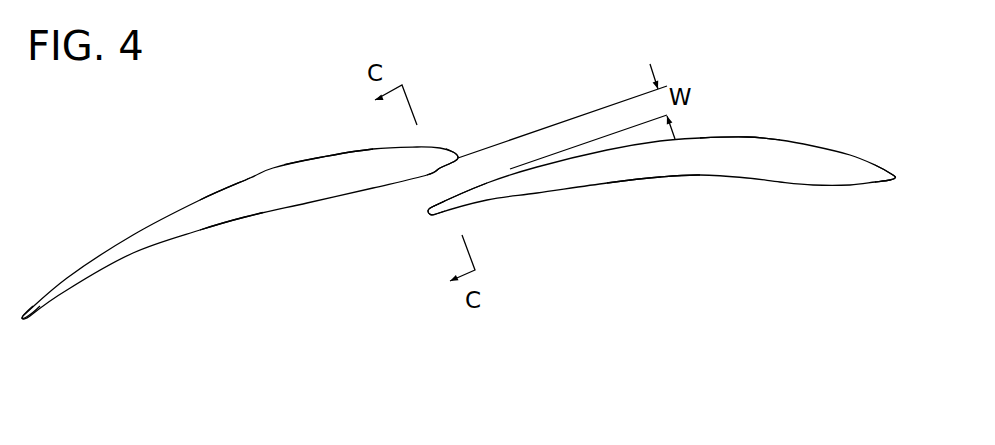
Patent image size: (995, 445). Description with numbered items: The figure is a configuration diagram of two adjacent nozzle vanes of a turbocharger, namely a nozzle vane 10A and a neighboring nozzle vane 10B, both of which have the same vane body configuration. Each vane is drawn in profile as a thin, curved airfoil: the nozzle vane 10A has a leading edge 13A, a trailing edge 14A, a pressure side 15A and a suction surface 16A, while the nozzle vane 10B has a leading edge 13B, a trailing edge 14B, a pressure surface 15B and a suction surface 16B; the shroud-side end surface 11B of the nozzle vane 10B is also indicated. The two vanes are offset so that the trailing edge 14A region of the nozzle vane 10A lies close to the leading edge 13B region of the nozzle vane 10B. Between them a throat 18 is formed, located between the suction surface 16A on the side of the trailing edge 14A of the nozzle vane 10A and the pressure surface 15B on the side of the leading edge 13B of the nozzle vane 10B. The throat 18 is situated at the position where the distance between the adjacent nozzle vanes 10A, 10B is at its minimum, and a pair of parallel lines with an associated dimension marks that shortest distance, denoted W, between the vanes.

The nozzle vane 10A is at (828, 152).
The nozzle vane 10B is at (133, 236).
The shroud-side end surface 11B is at (316, 160).
The leading edge 13A is at (899, 186).
The leading edge 13B is at (466, 148).
The trailing edge 14A is at (430, 228).
The trailing edge 14B is at (20, 336).
The pressure side 15A is at (667, 178).
The pressure surface 15B is at (236, 222).
The suction surface 16A is at (745, 136).
The suction surface 16B is at (223, 187).
The throat 18 is at (430, 196).